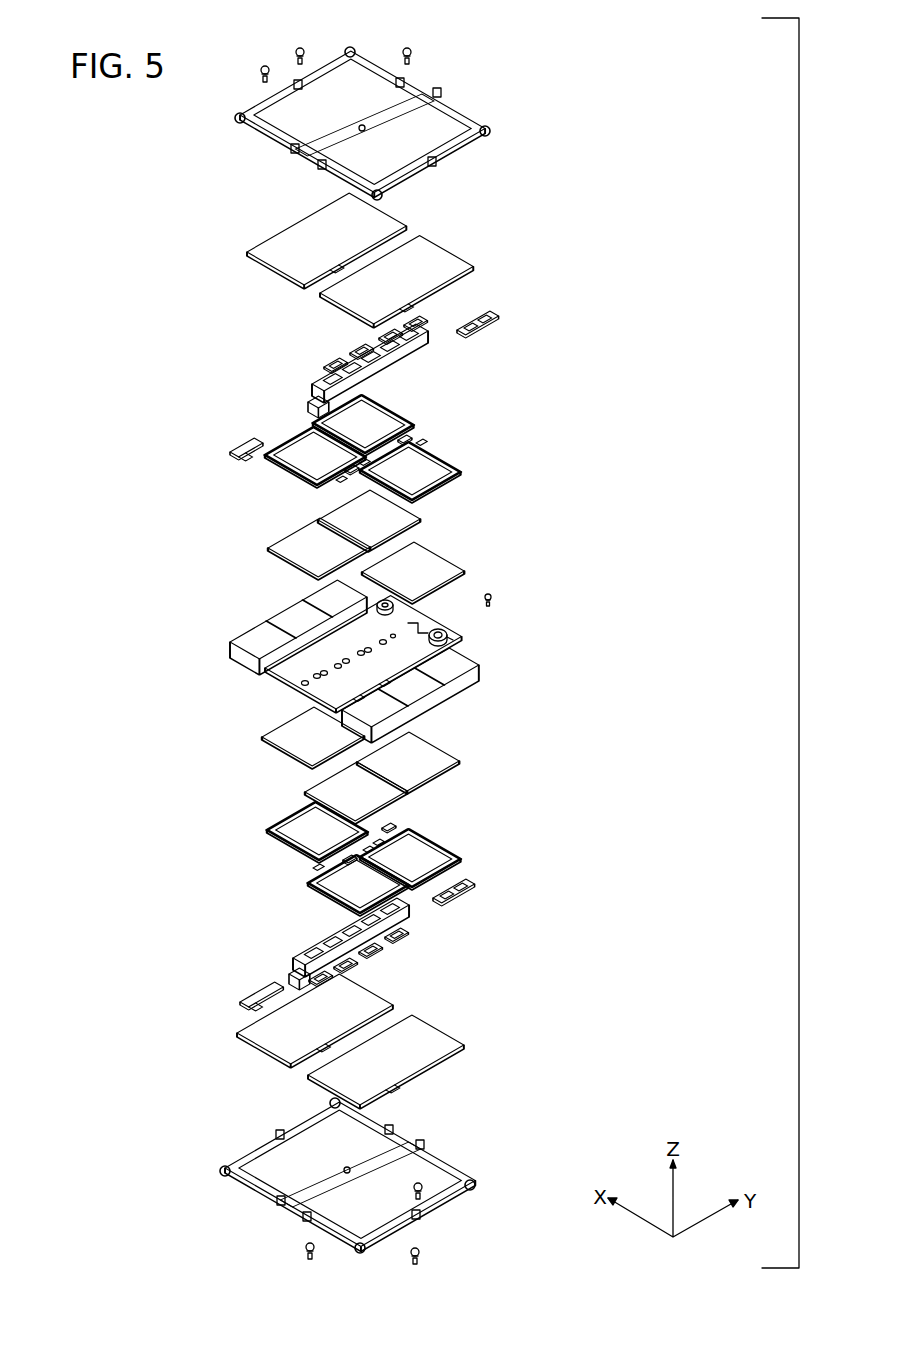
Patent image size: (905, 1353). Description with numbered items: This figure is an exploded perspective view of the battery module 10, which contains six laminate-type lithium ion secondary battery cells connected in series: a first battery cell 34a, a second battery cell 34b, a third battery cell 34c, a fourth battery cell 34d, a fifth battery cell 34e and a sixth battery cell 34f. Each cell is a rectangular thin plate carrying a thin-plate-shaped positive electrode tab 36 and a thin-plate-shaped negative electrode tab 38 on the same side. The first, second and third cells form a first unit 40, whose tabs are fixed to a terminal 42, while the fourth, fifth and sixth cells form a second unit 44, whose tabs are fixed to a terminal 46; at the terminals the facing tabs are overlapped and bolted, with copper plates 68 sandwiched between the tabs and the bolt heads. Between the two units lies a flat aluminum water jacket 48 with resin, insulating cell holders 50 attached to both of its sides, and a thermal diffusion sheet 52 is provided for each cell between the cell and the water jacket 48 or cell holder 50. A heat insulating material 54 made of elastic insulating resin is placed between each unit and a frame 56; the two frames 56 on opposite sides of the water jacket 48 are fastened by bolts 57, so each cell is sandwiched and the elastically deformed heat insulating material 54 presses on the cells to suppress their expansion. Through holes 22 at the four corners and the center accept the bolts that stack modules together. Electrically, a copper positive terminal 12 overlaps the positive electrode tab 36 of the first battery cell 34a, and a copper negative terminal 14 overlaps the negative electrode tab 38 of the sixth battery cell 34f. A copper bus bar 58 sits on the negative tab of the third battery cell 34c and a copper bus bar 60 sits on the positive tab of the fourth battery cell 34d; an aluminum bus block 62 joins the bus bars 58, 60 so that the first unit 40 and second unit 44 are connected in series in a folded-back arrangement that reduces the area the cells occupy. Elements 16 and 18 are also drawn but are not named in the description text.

The battery module 10 is at (672, 96).
The positive terminal 12 is at (238, 1001).
The negative terminal 14 is at (227, 449).
The first connector 16 is at (377, 612).
The second connector 18 is at (448, 634).
The through hole 22 is at (353, 48).
The first battery cell 34a is at (333, 891).
The second battery cell 34b is at (298, 820).
The third battery cell 34c is at (450, 850).
The fourth battery cell 34d is at (380, 414).
The fifth battery cell 34e is at (442, 480).
The sixth battery cell 34f is at (280, 460).
The positive electrode tab 36 is at (366, 462).
The negative electrode tab 38 is at (400, 438).
The first unit 40 is at (364, 855).
The terminal 42 is at (286, 960).
The second unit 44 is at (360, 439).
The terminal 46 is at (316, 391).
The water jacket 48 is at (268, 679).
The cell holder 50 is at (243, 634).
The thermal diffusion sheet 52 is at (298, 540).
The heat insulating material 54 is at (418, 258).
The frame 56 is at (427, 88).
The bolt 57 is at (262, 62).
The bus bar 58 is at (467, 889).
The bus bar 60 is at (492, 315).
The bus block 62 is at (492, 594).
The copper plate 68 is at (334, 345).